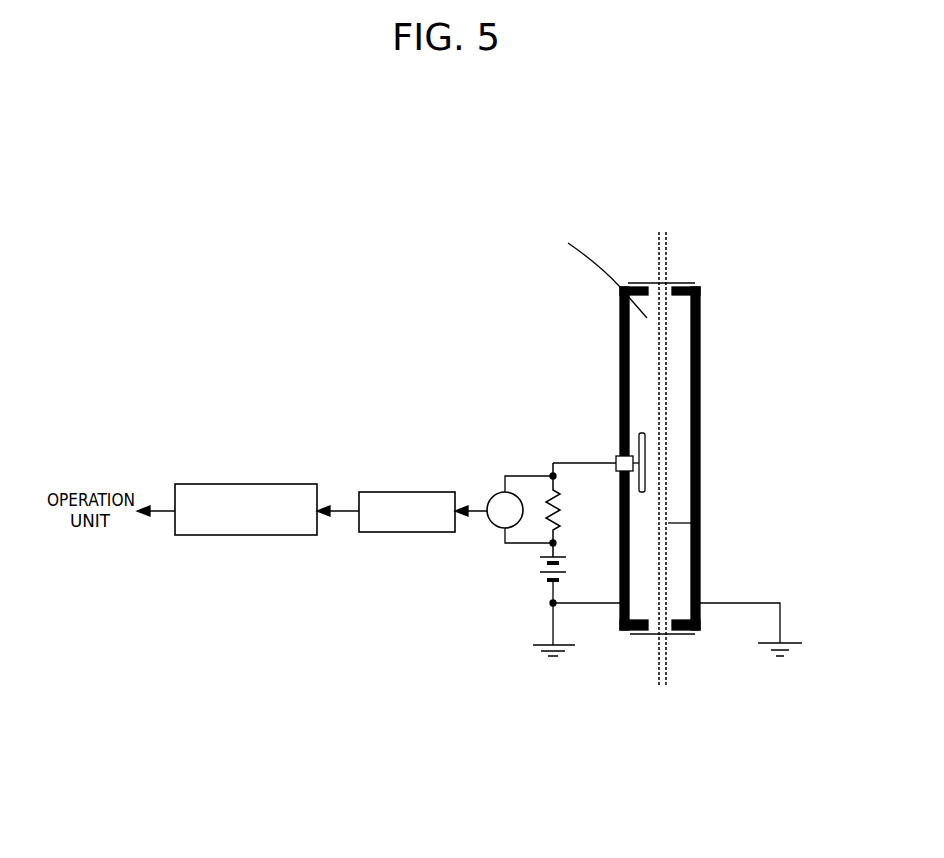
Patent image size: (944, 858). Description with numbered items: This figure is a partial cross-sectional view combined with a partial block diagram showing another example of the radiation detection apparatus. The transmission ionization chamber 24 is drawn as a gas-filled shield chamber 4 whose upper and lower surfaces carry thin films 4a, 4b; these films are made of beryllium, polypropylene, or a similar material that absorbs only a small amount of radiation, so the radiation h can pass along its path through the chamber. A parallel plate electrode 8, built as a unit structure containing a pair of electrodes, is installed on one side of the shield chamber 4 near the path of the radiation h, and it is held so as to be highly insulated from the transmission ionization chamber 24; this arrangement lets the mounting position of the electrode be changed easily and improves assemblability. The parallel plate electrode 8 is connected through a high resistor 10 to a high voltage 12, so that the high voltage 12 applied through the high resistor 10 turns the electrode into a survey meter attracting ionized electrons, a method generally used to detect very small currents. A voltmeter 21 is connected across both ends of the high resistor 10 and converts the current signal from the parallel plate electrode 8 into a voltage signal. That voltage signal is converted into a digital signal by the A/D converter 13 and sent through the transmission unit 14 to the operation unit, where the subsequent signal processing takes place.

The shield chamber 4 is at (700, 367).
The thin film 4a is at (682, 283).
The thin film 4b is at (683, 636).
The parallel plate electrode 8 is at (640, 433).
The high resistor 10 is at (548, 492).
The high voltage 12 is at (537, 563).
The A/D converter 13 is at (407, 533).
The transmission unit 14 is at (242, 535).
The voltmeter 21 is at (491, 498).
The transmission ionization chamber 24 is at (595, 473).
The radiation h is at (700, 523).